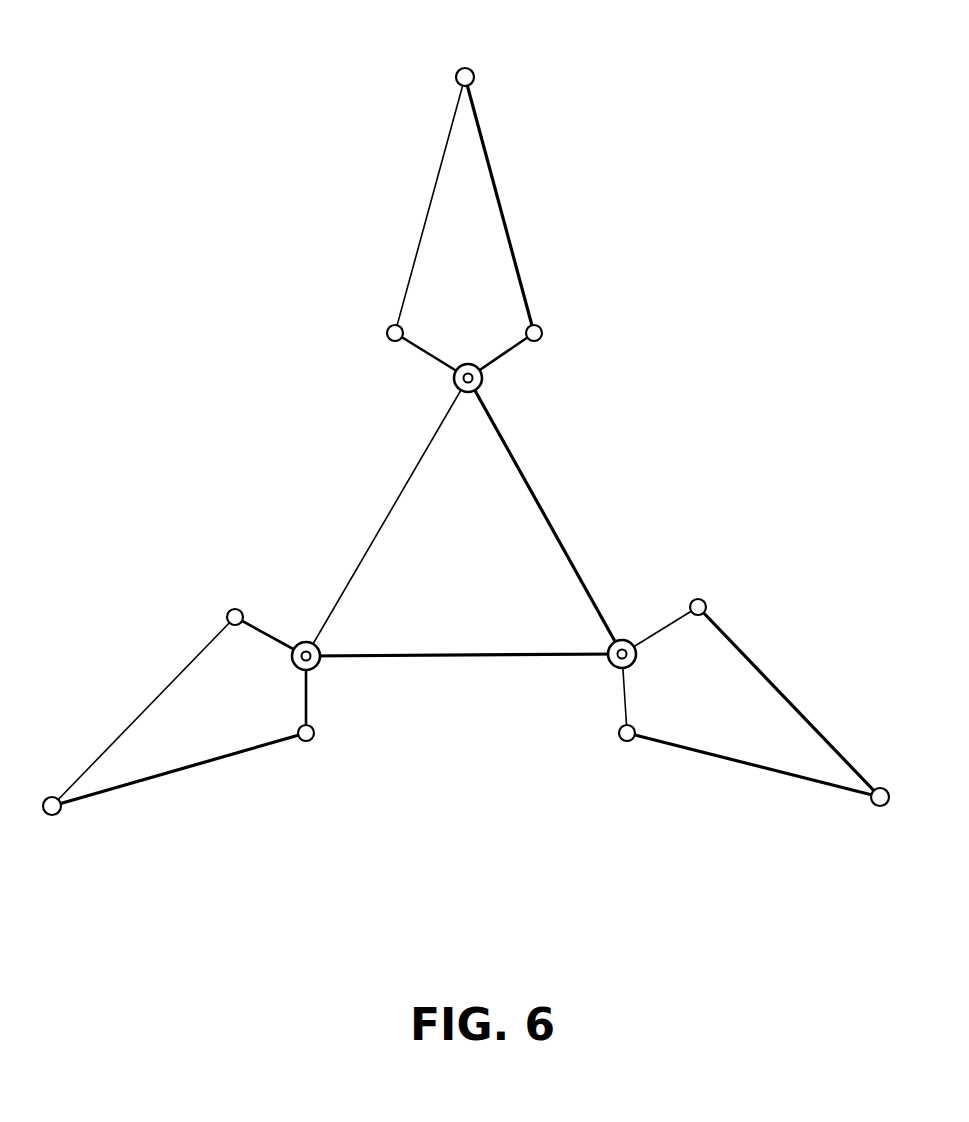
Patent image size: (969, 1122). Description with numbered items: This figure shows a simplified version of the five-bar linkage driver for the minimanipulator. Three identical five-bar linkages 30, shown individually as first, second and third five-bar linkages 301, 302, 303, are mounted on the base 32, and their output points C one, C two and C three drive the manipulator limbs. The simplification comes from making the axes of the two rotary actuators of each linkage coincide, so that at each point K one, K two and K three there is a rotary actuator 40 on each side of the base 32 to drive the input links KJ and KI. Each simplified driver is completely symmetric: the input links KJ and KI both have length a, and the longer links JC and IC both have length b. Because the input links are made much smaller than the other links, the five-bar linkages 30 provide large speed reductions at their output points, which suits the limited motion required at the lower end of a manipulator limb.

The five-bar linkage 30 is at (472, 461).
The first five-bar linkage 301 is at (537, 165).
The second five-bar linkage 302 is at (175, 794).
The third five-bar linkage 303 is at (762, 660).
The base 32 is at (489, 555).
The rotary actuator 40 is at (470, 392).